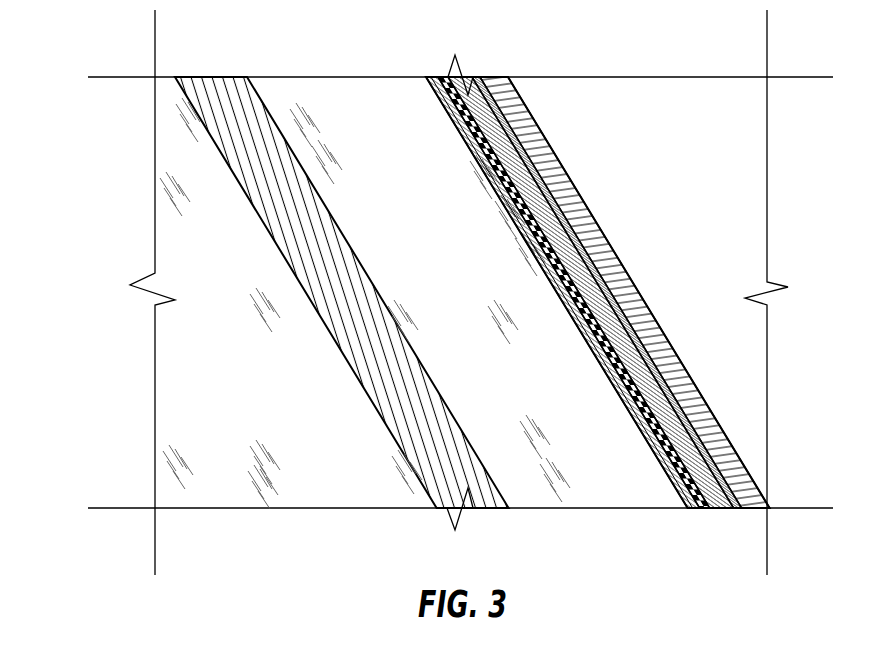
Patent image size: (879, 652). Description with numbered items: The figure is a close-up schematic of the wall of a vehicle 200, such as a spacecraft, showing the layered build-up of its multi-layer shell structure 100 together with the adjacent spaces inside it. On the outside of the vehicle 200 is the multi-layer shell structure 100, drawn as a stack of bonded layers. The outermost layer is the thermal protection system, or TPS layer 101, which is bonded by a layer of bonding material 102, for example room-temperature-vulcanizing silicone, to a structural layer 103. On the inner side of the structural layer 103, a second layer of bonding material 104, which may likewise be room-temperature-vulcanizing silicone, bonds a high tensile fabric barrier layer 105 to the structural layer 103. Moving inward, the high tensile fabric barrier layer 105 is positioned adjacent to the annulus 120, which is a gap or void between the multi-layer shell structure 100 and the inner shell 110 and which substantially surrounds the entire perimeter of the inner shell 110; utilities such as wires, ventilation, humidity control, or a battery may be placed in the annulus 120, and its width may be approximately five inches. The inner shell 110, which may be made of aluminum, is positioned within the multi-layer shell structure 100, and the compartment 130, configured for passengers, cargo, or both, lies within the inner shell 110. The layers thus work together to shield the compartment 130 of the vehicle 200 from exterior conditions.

The vehicle 200 is at (116, 41).
The multi-layer shell structure 100 is at (662, 122).
The TPS layer 101 is at (548, 142).
The layer of bonding material 102 is at (547, 197).
The structural layer 103 is at (562, 240).
The layer of bonding material 104 is at (568, 282).
The high tensile fabric barrier layer 105 is at (583, 327).
The inner shell 110 is at (365, 306).
The annulus 120 is at (490, 306).
The compartment 130 is at (241, 306).